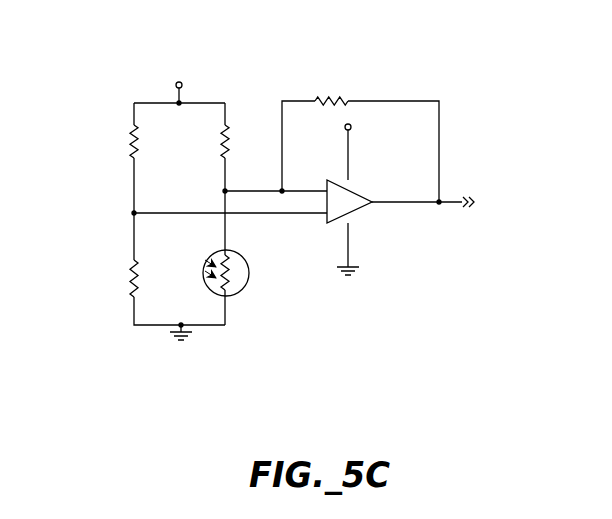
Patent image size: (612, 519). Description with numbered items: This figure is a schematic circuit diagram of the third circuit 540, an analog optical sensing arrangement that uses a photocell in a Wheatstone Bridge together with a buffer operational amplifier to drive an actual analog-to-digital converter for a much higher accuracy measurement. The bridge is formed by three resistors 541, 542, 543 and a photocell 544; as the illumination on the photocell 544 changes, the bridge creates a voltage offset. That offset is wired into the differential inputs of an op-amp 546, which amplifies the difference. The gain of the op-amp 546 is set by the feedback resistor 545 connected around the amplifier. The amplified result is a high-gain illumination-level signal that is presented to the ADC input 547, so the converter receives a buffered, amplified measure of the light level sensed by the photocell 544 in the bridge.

The third circuit 540 is at (262, 395).
The resistor 541 is at (117, 128).
The resistor 542 is at (238, 112).
The resistor 543 is at (126, 276).
The photocell 544 is at (247, 250).
The feedback resistor 545 is at (344, 74).
The op-amp 546 is at (358, 215).
The ADC input 547 is at (476, 172).